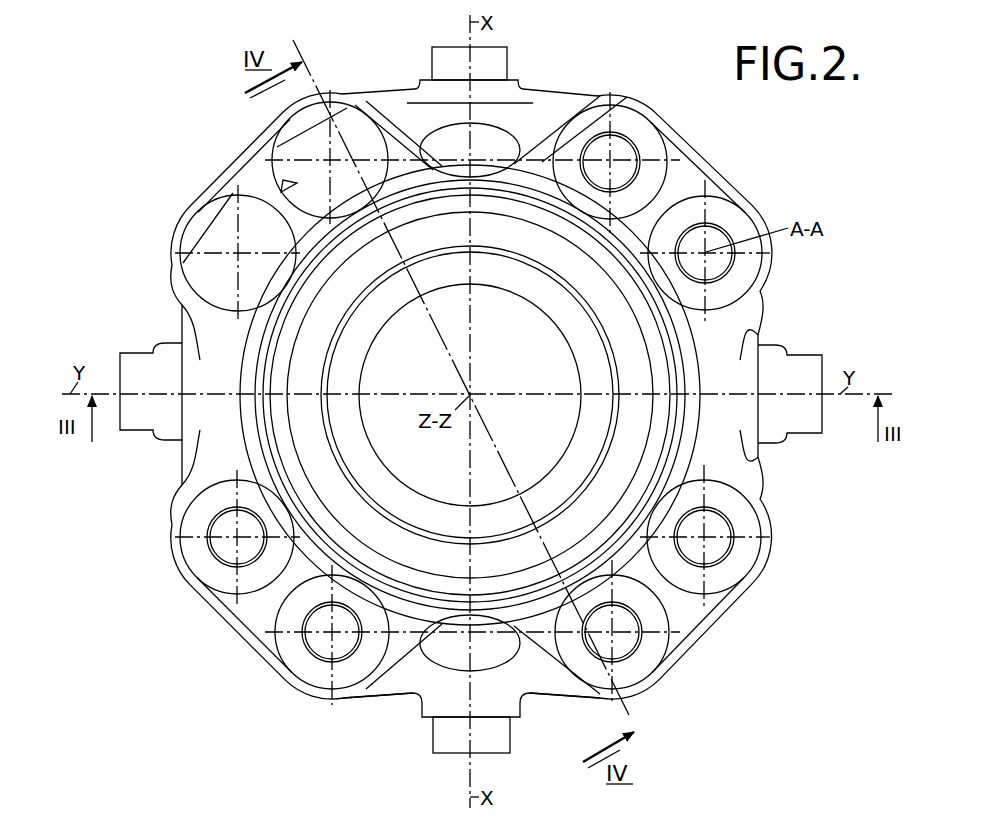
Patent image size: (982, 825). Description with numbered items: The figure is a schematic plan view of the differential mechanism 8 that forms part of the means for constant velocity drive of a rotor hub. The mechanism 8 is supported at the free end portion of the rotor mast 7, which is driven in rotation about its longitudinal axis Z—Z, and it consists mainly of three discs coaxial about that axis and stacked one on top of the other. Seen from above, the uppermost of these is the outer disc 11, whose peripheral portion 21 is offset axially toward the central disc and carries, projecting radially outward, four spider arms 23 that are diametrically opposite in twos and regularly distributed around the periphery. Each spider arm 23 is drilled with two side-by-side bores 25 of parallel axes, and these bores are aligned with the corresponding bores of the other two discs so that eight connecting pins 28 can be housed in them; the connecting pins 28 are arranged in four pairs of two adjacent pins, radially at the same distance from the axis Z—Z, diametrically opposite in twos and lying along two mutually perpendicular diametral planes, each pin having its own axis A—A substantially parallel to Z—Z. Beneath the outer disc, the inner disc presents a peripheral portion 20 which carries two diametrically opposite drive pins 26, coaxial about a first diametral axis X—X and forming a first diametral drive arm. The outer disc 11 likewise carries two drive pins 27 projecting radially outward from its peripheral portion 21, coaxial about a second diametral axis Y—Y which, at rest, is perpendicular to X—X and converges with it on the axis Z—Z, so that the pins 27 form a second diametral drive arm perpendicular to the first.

The mast 7 is at (558, 330).
The differential mechanism 8 is at (180, 203).
The outer disc 11 is at (242, 433).
The peripheral portion 20 is at (517, 122).
The peripheral portion 21 is at (213, 348).
The spider arms 23 is at (252, 155).
The bores 25 is at (293, 190).
The drive pins 26 is at (482, 63).
The drive pins 27 is at (137, 415).
The connecting pins 28 is at (638, 173).